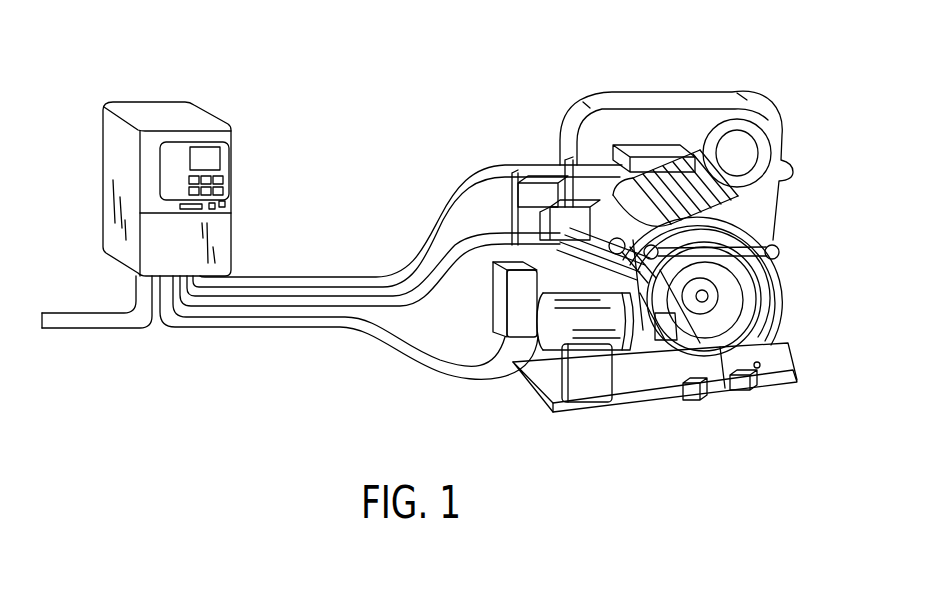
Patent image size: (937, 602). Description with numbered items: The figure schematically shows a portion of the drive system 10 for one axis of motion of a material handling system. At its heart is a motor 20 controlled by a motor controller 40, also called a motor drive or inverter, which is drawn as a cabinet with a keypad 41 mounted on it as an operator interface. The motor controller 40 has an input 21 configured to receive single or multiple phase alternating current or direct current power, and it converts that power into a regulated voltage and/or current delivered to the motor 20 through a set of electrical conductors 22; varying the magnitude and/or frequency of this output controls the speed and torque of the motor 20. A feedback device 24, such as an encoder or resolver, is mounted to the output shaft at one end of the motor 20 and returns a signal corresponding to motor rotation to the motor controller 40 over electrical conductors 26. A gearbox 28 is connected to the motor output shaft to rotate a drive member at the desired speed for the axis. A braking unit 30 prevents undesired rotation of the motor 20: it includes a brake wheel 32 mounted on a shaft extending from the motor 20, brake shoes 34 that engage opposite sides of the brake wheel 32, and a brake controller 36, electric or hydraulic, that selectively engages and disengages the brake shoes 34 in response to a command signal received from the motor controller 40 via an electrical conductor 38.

The drive system 10 is at (370, 88).
The motor 20 is at (768, 207).
The input 21 is at (84, 328).
The electrical conductors 22 is at (413, 290).
The feedback device 24 is at (663, 132).
The electrical conductors 26 is at (303, 277).
The gearbox 28 is at (767, 123).
The braking unit 30 is at (802, 265).
The brake wheel 32 is at (710, 325).
The brake shoes 34 is at (758, 293).
The brake controller 36 is at (478, 325).
The electrical conductor 38 is at (273, 322).
The motor controller 40 is at (128, 162).
The keypad 41 is at (222, 160).